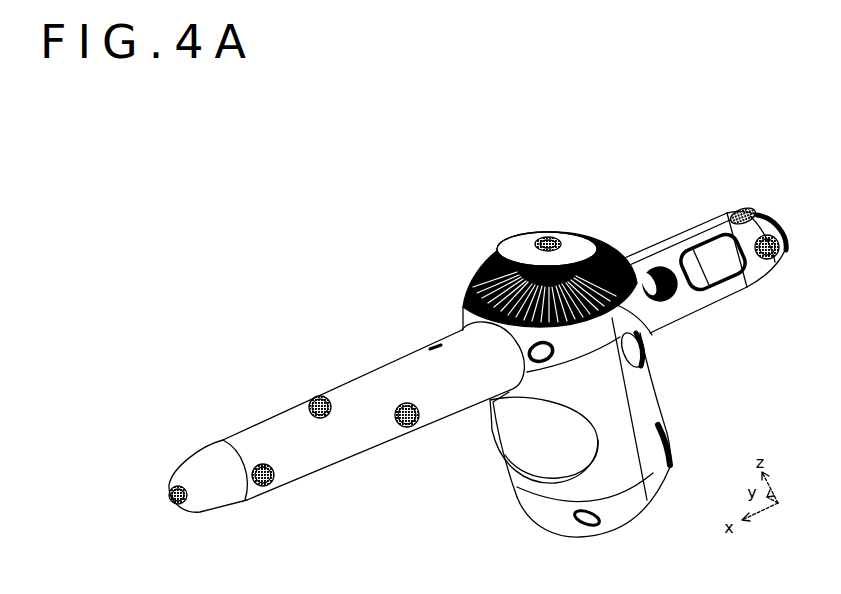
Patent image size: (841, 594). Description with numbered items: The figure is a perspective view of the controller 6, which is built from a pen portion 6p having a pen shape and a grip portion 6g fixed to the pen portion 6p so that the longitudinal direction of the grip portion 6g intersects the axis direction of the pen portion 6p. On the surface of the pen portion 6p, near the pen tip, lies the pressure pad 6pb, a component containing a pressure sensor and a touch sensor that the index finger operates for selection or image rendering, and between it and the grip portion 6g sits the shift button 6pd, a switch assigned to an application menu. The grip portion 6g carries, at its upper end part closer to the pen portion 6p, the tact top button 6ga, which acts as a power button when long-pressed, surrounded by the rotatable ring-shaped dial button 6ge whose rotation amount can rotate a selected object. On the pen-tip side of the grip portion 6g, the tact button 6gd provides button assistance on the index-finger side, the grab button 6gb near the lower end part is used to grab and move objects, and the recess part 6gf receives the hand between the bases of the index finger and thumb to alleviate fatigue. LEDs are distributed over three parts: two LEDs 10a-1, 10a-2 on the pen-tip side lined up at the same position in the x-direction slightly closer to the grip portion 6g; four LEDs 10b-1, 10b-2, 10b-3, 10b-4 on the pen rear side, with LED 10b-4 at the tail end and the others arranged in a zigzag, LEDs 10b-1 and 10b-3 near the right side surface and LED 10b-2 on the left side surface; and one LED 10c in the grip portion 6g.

The controller 6 is at (346, 412).
The pen portion 6p is at (402, 357).
The grip portion 6g is at (520, 484).
The tact top button 6ga is at (517, 250).
The grab button 6gb is at (673, 440).
The tact button 6gd is at (652, 336).
The dial button 6ge is at (477, 270).
The recess part 6gf is at (513, 443).
The pressure pad 6pb is at (710, 253).
The shift button 6pd is at (653, 267).
The LED 10a-1 is at (740, 211).
The LED 10a-2 is at (773, 252).
The LED 10b-1 is at (408, 428).
The LED 10b-2 is at (322, 396).
The LED 10b-3 is at (268, 486).
The LED 10b-4 is at (168, 497).
The LED 10c is at (548, 238).